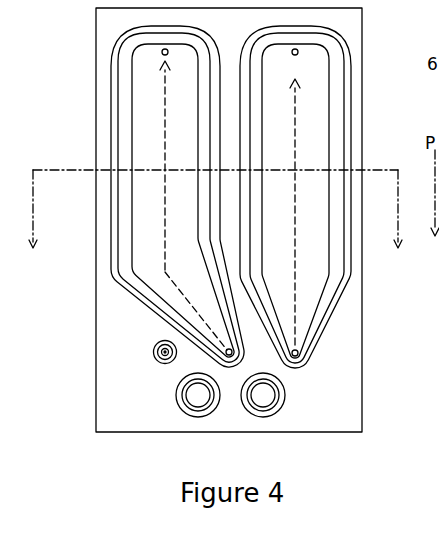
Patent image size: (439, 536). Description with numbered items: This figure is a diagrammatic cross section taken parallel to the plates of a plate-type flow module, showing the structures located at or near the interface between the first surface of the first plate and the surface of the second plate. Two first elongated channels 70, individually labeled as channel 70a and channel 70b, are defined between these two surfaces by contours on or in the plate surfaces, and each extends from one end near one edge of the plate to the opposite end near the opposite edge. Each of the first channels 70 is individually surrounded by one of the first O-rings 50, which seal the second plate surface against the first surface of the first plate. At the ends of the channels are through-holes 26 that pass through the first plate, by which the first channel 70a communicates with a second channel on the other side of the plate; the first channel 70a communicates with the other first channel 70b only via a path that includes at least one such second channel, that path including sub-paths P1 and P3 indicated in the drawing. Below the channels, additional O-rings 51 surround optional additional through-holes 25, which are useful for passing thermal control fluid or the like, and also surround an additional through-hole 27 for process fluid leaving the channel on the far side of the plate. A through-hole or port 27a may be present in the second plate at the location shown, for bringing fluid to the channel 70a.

The additional through-hole 25 is at (198, 398).
The through-hole 26 is at (162, 51).
The additional through-hole 27 is at (153, 353).
The through-hole or port 27a is at (300, 355).
The first O-ring 50 is at (118, 151).
The additional O-ring 51 is at (165, 366).
The first elongated channel 70 is at (230, 181).
The first channel 70a is at (318, 219).
The first channel 70b is at (318, 220).
The sub-path P1 is at (297, 275).
The sub-path P3 is at (165, 200).